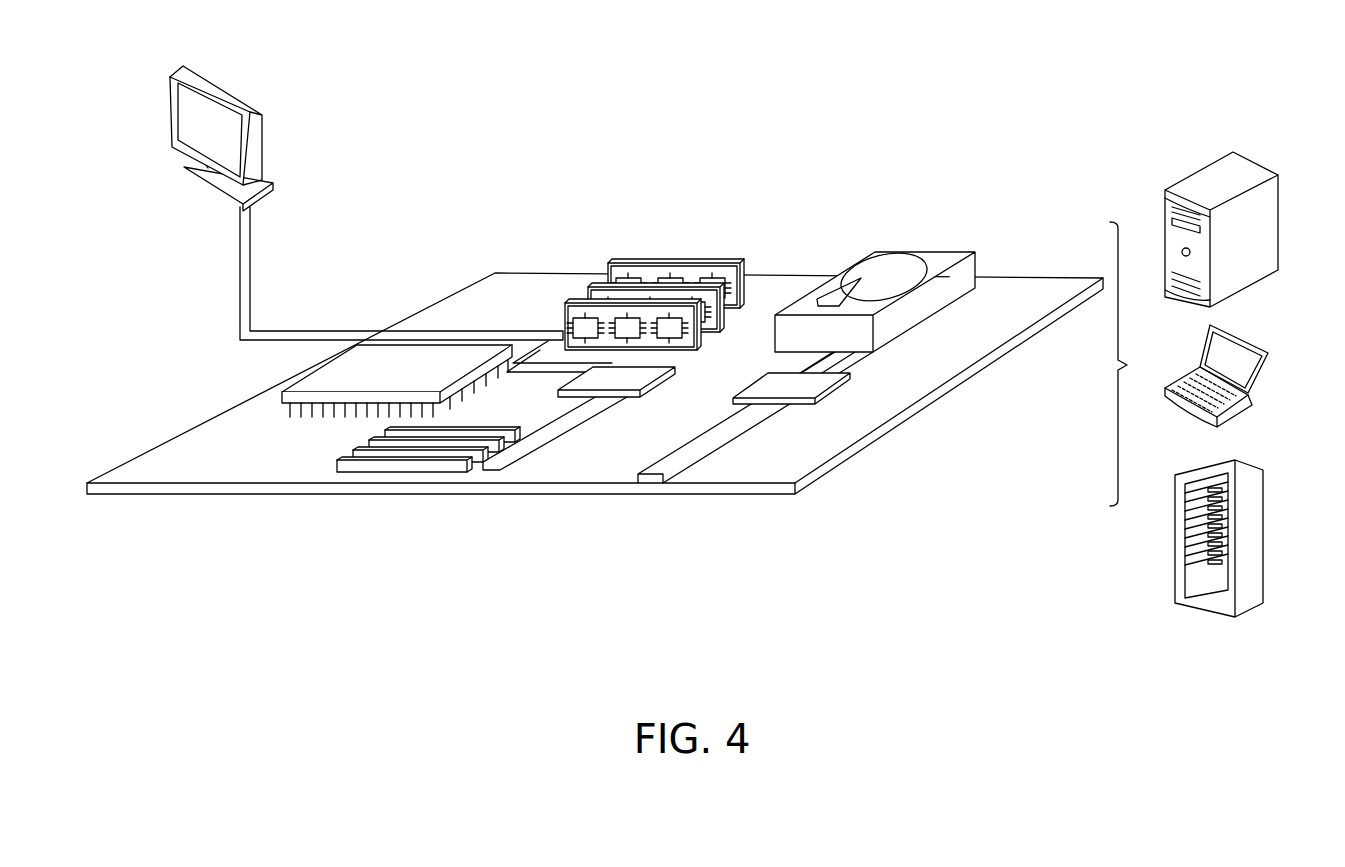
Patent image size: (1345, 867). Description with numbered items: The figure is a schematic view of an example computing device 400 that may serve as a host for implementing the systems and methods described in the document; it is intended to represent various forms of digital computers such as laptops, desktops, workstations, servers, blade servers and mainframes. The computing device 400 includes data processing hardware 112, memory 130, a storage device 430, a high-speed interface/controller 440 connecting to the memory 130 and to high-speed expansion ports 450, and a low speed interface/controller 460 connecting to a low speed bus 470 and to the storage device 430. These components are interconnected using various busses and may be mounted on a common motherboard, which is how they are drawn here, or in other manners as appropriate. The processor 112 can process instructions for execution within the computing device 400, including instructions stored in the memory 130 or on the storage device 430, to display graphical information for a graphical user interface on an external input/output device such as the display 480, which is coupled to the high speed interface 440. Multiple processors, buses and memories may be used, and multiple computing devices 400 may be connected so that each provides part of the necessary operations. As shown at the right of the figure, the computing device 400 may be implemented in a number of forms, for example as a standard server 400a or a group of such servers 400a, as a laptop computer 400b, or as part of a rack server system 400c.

The computing device 400 is at (938, 52).
The standard server 400a is at (1197, 168).
The laptop computer 400b is at (1250, 347).
The rack server system 400c is at (1257, 517).
The data processing hardware 112 is at (282, 394).
The memory 130 is at (672, 262).
The storage device 430 is at (915, 249).
The high-speed interface/controller 440 is at (622, 396).
The high-speed expansion ports 450 is at (337, 463).
The low speed interface/controller 460 is at (783, 378).
The low speed bus 470 is at (672, 492).
The display 480 is at (170, 118).